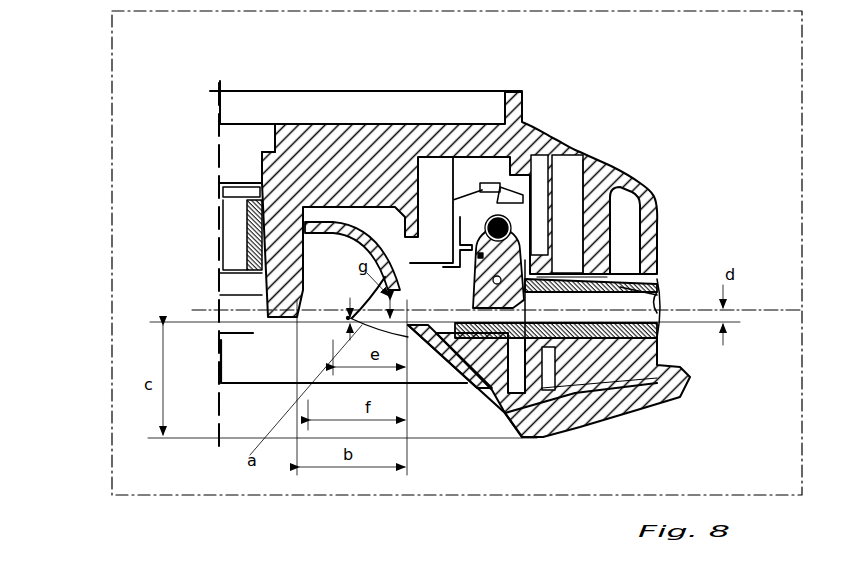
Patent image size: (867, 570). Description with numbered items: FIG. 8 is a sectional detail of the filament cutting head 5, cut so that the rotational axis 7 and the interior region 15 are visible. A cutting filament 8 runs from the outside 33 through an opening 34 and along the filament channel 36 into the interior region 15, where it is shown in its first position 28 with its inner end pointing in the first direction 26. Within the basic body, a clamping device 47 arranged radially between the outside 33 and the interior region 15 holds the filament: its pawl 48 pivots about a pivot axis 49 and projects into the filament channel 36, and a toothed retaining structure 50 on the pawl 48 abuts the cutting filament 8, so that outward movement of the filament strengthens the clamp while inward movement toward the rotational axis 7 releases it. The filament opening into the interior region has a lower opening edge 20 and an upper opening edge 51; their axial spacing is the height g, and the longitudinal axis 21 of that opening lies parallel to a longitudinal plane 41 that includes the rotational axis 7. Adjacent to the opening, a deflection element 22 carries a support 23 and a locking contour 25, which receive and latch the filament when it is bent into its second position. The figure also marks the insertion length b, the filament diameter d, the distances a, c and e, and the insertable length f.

The longitudinal plane 41 is at (113, 137).
The filament cutting head 5 is at (682, 90).
The rotational axis 7 is at (217, 136).
The interior region 15 is at (330, 250).
The deflection element 22 is at (226, 188).
The first position 28 is at (300, 280).
The first direction 26 is at (207, 311).
The pivot axis 49 is at (510, 188).
The clamping device 47 is at (518, 202).
The pawl 48 is at (523, 235).
The filament channel 36 is at (622, 292).
The outside 33 is at (648, 292).
The opening 34 is at (662, 300).
The cutting filament 8 is at (740, 311).
The longitudinal axis 21 is at (687, 312).
The retaining structure 50 is at (510, 333).
The upper opening edge 51 is at (430, 345).
The lower opening edge 20 is at (412, 337).
The locking contour 25 is at (353, 320).
The support 23 is at (345, 316).